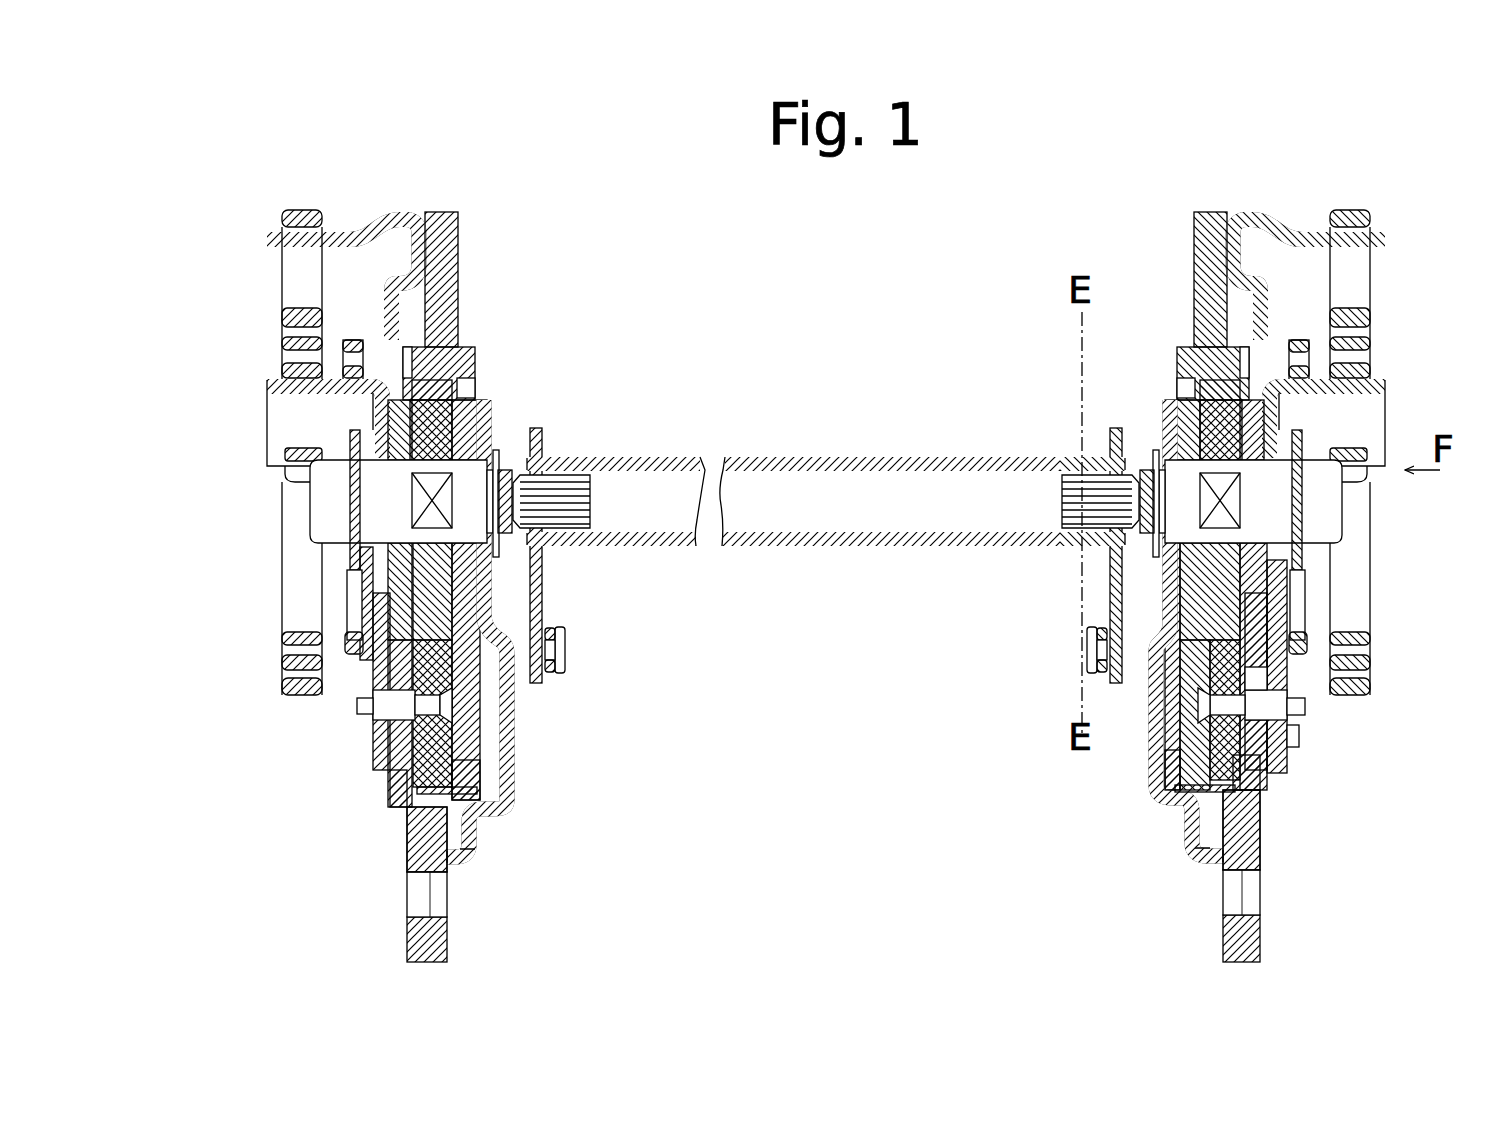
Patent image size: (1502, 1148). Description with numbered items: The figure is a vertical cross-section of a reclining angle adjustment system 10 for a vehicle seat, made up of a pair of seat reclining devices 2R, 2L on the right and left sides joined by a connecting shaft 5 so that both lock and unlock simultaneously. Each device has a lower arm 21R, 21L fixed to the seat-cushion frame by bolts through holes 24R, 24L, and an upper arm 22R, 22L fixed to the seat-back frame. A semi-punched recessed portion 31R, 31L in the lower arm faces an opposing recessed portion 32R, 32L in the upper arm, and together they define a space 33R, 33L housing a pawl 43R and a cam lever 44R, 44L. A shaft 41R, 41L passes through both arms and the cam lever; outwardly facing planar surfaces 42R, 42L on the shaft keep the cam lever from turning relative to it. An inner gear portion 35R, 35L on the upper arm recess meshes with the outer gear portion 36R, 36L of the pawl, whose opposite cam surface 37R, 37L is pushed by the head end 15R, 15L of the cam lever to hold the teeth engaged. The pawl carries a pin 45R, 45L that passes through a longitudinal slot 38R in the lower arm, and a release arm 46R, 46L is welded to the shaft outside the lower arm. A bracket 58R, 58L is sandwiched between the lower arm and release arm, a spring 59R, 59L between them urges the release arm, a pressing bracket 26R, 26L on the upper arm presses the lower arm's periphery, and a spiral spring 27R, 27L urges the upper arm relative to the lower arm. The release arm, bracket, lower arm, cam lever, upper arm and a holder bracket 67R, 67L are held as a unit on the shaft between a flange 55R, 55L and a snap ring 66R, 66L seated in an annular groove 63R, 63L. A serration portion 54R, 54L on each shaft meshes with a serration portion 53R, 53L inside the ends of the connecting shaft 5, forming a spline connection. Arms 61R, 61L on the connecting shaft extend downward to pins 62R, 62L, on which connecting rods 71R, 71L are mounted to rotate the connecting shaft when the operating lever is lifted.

The seat reclining device 2L is at (352, 210).
The seat reclining device 2R is at (1252, 200).
The connecting shaft 5 is at (795, 456).
The reclining angle adjustment system 10 is at (780, 318).
The head end 15L is at (386, 710).
The head end 15R is at (1200, 640).
The lower arm 21L is at (412, 850).
The lower arm 21R is at (1262, 848).
The upper arm 22L is at (442, 214).
The upper arm 22R is at (1210, 212).
The holes 24L is at (412, 895).
The holes 24R is at (1262, 895).
The pressing bracket 26L is at (412, 213).
The pressing bracket 26R is at (1262, 214).
The spiral spring 27L is at (300, 317).
The spiral spring 27R is at (1352, 318).
The recessed portion 31L is at (415, 796).
The recessed portion 31R is at (1243, 796).
The recessed portion 32L is at (445, 415).
The recessed portion 32R is at (1208, 415).
The space 33L is at (437, 405).
The space 33R is at (1225, 405).
The inner gear portion 35L is at (478, 788).
The inner gear portion 35R is at (1172, 780).
The outer gear portion 36L is at (452, 862).
The outer gear portion 36R is at (1207, 866).
The cam surface 37L is at (450, 640).
The cam surface 37R is at (1215, 610).
The longitudinal slot 38R is at (1305, 693).
The shaft 41L is at (318, 530).
The shaft 41R is at (1330, 530).
The outwardly facing planar surfaces 42L is at (417, 497).
The outwardly facing planar surfaces 42R is at (1240, 497).
The pawl 43R is at (1299, 738).
The cam lever 44L is at (440, 625).
The cam lever 44R is at (1238, 612).
The pin 45L is at (376, 702).
The pin 45R is at (1275, 705).
The release arm 46L is at (374, 763).
The release arm 46R is at (1285, 762).
The serration portion 53L is at (596, 486).
The serration portion 53R is at (1058, 486).
The serration portion 54L is at (560, 488).
The serration portion 54R is at (1095, 488).
The flange 55L is at (355, 565).
The flange 55R is at (1302, 565).
The bracket 58L is at (283, 413).
The bracket 58R is at (1375, 410).
The spring 59L is at (357, 345).
The spring 59R is at (1298, 345).
The arm 61L is at (543, 602).
The arm 61R is at (1115, 600).
The pin 62L is at (562, 655).
The pin 62R is at (1098, 655).
The annular groove 63L is at (540, 548).
The annular groove 63R is at (1122, 548).
The snap ring 66L is at (506, 555).
The snap ring 66R is at (1145, 555).
The holder bracket 67L is at (468, 838).
The holder bracket 67R is at (1190, 838).
The connecting rod 71L is at (552, 672).
The connecting rod 71R is at (1104, 672).